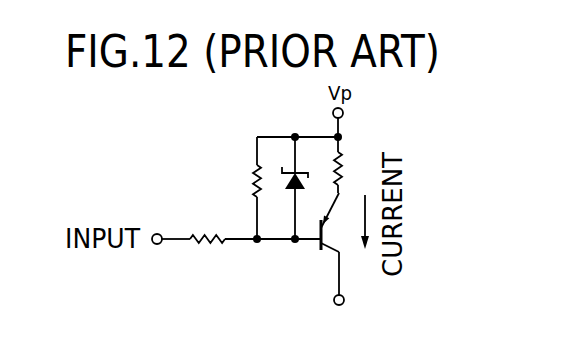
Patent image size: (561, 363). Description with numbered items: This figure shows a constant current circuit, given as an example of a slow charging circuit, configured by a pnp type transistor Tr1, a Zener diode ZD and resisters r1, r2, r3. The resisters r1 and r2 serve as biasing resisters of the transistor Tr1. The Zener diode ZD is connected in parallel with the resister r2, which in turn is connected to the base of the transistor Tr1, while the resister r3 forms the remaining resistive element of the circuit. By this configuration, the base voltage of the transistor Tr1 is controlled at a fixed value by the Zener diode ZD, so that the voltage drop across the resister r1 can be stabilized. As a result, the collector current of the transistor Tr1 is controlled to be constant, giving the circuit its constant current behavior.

The resister r1 is at (354, 171).
The resister r2 is at (240, 182).
The resister r3 is at (207, 223).
The Zener diode ZD is at (306, 192).
The pnp type transistor Tr1 is at (316, 238).